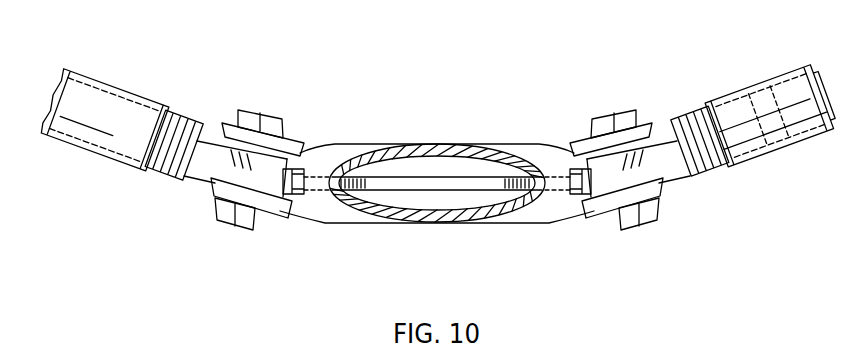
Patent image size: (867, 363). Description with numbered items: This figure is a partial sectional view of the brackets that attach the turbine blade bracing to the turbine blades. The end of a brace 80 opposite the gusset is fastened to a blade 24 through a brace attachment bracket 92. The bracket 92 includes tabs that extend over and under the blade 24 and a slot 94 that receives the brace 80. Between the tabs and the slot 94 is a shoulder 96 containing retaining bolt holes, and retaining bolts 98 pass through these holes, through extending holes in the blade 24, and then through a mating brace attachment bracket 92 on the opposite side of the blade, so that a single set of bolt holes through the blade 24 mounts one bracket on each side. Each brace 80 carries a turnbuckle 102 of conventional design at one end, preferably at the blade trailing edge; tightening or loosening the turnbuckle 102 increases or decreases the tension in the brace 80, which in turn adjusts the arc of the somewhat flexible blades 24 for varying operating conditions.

The blade 24 is at (428, 146).
The brace 80 is at (182, 114).
The brace attachment bracket 92 is at (342, 144).
The slot 94 is at (203, 174).
The shoulder 96 is at (286, 198).
The retaining bolt 98 is at (473, 152).
The turnbuckle 102 is at (107, 84).